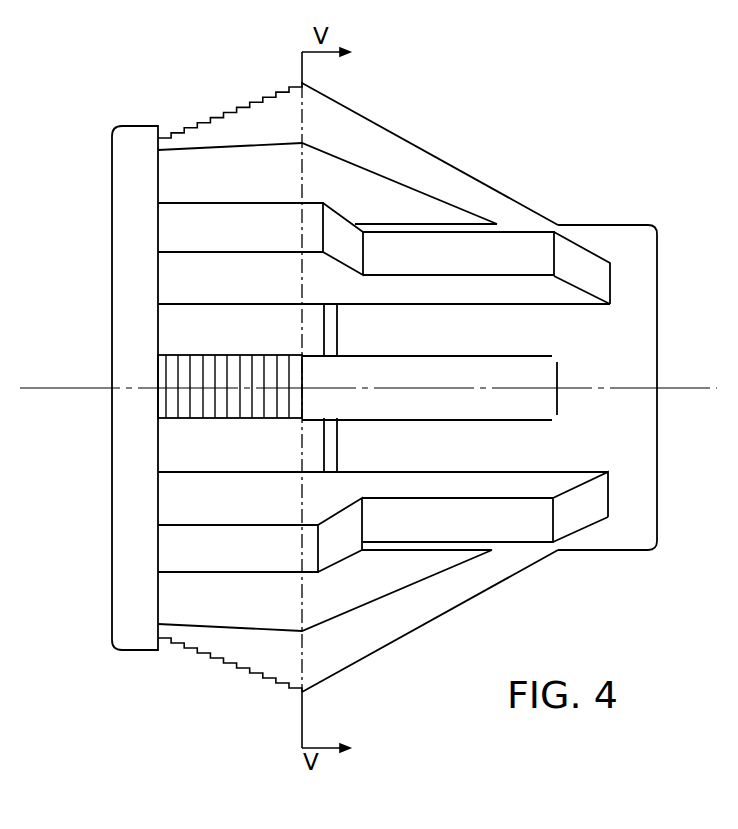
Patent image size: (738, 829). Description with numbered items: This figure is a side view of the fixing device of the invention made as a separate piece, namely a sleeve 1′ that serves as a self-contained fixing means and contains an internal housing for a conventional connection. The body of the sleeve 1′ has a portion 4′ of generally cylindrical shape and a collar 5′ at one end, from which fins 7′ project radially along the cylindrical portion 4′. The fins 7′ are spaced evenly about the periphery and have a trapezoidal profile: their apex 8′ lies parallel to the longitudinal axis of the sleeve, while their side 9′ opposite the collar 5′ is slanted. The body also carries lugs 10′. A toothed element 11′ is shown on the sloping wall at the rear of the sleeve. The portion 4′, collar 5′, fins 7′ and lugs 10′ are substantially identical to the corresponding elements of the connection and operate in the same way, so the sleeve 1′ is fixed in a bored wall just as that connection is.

The sleeve 1′ is at (506, 151).
The portion 4′ is at (648, 237).
The collar 5′ is at (115, 220).
The fins 7′ is at (232, 282).
The apex 8′ is at (232, 215).
The side 9′ is at (337, 222).
The lugs 10′ is at (380, 137).
The ratchet teeth 11′ is at (217, 113).